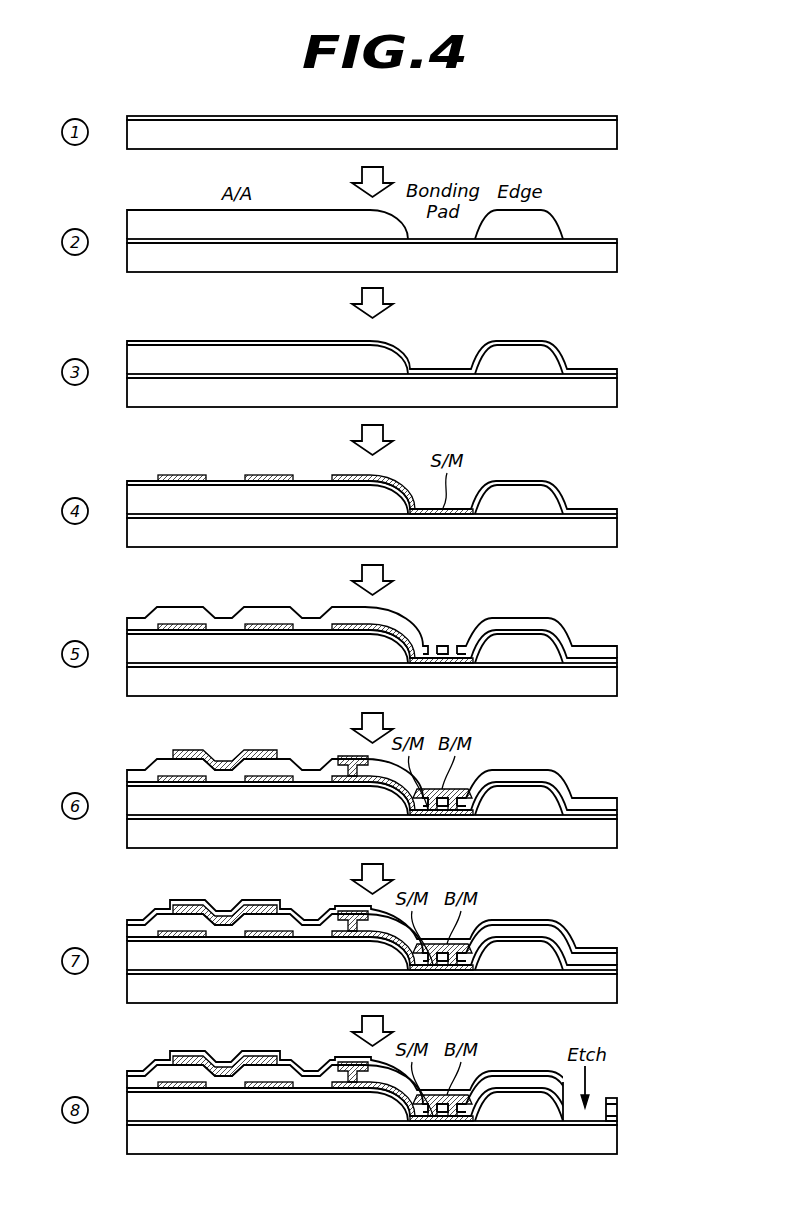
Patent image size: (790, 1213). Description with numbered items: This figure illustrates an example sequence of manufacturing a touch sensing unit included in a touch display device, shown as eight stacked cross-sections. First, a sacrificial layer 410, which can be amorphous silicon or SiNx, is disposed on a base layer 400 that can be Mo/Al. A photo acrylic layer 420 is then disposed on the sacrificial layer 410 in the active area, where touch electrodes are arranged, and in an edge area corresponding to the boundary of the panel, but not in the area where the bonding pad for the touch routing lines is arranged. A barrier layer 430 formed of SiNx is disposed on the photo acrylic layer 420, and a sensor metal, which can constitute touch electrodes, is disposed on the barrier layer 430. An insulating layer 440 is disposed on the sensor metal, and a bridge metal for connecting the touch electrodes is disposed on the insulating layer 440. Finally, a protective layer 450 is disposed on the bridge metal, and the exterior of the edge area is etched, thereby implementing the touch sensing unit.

The base layer 400 is at (613, 135).
The sacrificial layer 410 is at (576, 117).
The photo acrylic layer 420 is at (552, 217).
The barrier layer 430 is at (613, 370).
The insulating layer 440 is at (590, 650).
The protective layer 450 is at (592, 947).